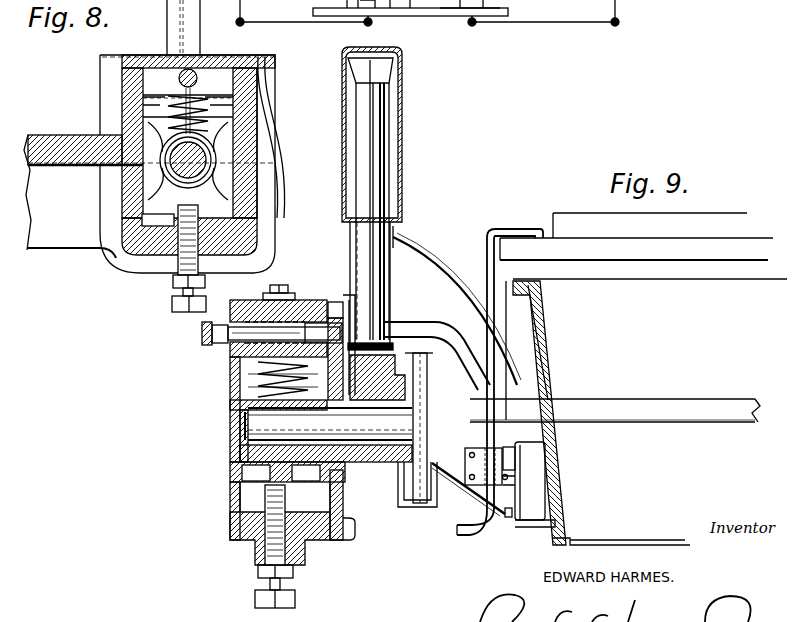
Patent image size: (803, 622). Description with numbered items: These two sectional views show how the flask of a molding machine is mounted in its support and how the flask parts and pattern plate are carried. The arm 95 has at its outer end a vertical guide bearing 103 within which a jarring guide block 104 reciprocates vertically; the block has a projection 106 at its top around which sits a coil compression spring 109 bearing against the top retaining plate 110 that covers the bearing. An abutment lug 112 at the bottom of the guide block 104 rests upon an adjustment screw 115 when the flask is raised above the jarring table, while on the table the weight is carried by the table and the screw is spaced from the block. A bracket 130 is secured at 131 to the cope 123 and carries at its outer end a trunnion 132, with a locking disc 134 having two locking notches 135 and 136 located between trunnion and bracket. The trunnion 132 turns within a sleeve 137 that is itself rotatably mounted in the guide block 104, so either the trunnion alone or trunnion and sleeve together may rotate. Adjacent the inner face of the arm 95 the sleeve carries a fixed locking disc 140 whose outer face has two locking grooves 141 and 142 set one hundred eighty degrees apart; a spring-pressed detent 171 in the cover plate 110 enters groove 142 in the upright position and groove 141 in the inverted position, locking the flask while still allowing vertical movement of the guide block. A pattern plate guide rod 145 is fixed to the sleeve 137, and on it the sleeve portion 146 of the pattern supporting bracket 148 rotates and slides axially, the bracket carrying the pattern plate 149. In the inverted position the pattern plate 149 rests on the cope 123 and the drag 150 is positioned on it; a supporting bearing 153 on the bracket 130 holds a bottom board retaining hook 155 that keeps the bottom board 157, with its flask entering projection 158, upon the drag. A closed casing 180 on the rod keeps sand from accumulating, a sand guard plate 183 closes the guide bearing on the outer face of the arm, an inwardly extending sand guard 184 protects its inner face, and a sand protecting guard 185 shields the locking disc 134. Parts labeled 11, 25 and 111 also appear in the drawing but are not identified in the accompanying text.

In FIG. 8, the frame bar 11 is at (450, 10).
In FIG. 8, the pivot 25 is at (377, 18).
In FIG. 8, the arm 95 is at (70, 140).
In FIG. 8, the vertical guide bearing 103 is at (125, 106).
In FIG. 8, the jarring guide block 104 is at (232, 461).
In FIG. 8, the projection 106 is at (234, 378).
In FIG. 8, the coil compression spring 109 is at (258, 104).
In FIG. 8, the top retaining plate 110 is at (238, 57).
In FIG. 8, the small ball valve 111 is at (182, 70).
In FIG. 8, the abutment lug 112 is at (258, 468).
In FIG. 8, the adjustment screw 115 is at (178, 268).
In FIG. 9, the cope 123 is at (629, 500).
In FIG. 8, the bracket 130 is at (458, 476).
In FIG. 9, the securing point 131 is at (525, 475).
In FIG. 8, the trunnion 132 is at (248, 421).
In FIG. 8, the locking disc 134 is at (405, 503).
In FIG. 8, the locking notch 135 is at (450, 343).
In FIG. 8, the locking notch 136 is at (430, 433).
In FIG. 8, the sleeve 137 is at (236, 403).
In FIG. 8, the locking disc 140 is at (352, 538).
In FIG. 8, the locking groove 141 is at (315, 410).
In FIG. 8, the locking groove 142 is at (338, 503).
In FIG. 8, the pattern plate guide rod 145 is at (385, 158).
In FIG. 8, the sleeve portion 146 is at (398, 238).
In FIG. 8, the pattern supporting bracket 148 is at (437, 280).
In FIG. 9, the pattern plate 149 is at (607, 396).
In FIG. 9, the drag 150 is at (538, 338).
In FIG. 9, the supporting bearing 153 is at (498, 518).
In FIG. 9, the bottom board retaining hook 155 is at (492, 224).
In FIG. 9, the bottom board 157 is at (636, 236).
In FIG. 9, the flask entering projection 158 is at (650, 270).
In FIG. 8, the spring-pressed detent 171 is at (330, 300).
In FIG. 8, the closed casing 180 is at (402, 110).
In FIG. 8, the sand guard plate 183 is at (236, 450).
In FIG. 8, the sand guard 184 is at (332, 295).
In FIG. 8, the sand protecting guard 185 is at (418, 504).